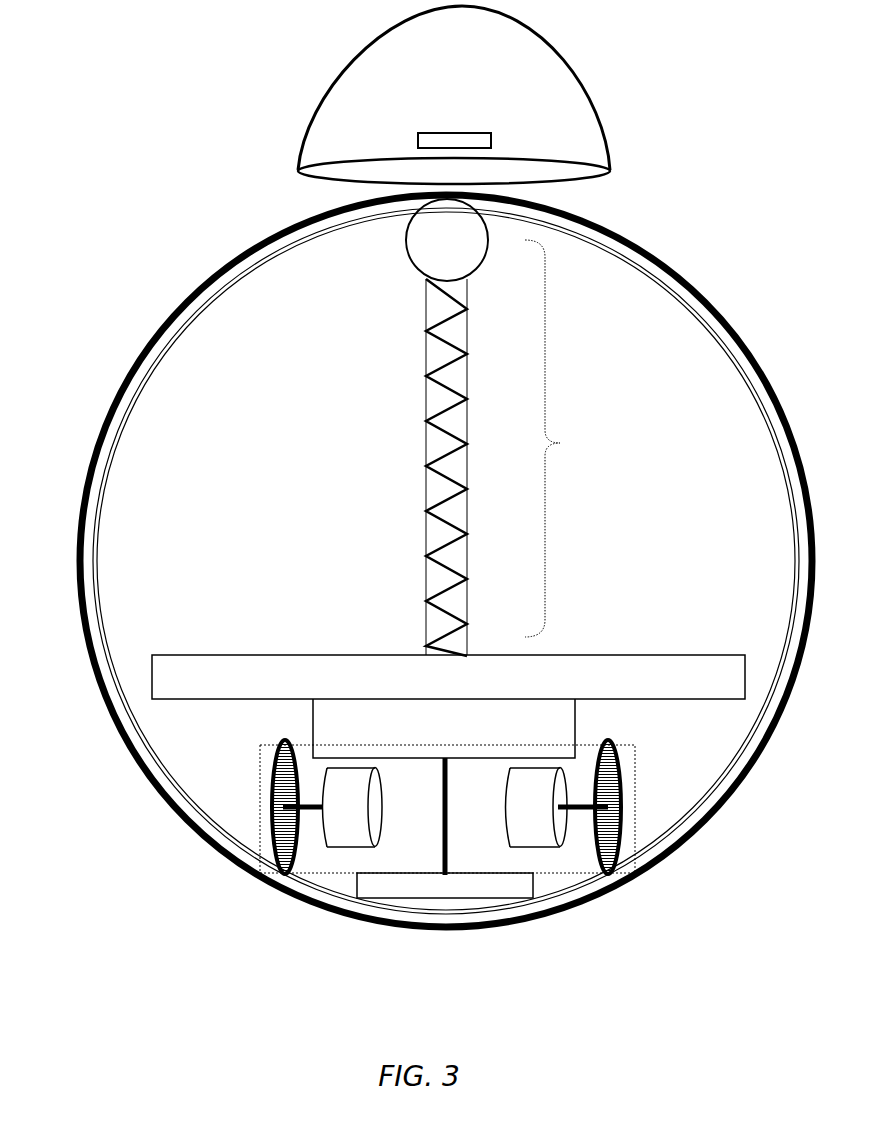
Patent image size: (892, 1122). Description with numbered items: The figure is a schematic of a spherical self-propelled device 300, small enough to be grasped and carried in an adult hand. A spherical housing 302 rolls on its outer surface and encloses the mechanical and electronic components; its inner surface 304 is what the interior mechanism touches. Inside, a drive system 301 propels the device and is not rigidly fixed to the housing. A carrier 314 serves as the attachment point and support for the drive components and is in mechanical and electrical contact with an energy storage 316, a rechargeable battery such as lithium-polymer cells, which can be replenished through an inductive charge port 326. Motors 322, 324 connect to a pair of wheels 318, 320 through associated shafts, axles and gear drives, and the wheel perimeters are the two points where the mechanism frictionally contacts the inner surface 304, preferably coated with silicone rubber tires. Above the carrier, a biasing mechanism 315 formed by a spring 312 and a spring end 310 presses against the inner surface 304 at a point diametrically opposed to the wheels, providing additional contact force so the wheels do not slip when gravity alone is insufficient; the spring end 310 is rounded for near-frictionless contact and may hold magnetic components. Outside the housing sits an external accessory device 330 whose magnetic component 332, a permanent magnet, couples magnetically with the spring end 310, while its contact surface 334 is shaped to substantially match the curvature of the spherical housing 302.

The self-propelled device 300 is at (188, 210).
The drive system 301 is at (260, 847).
The spherical housing 302 is at (720, 290).
The inner surface 304 is at (710, 328).
The spring end 310 is at (430, 251).
The spring 312 is at (430, 398).
The carrier 314 is at (408, 687).
The biasing mechanism 315 is at (569, 438).
The energy storage 316 is at (413, 724).
The wheel 318 is at (283, 795).
The wheel 320 is at (627, 812).
The motor 322 is at (328, 817).
The motor 324 is at (515, 817).
The inductive charge port 326 is at (470, 903).
The external accessory device 330 is at (392, 73).
The magnetic component 332 is at (487, 133).
The contact surface 334 is at (527, 162).